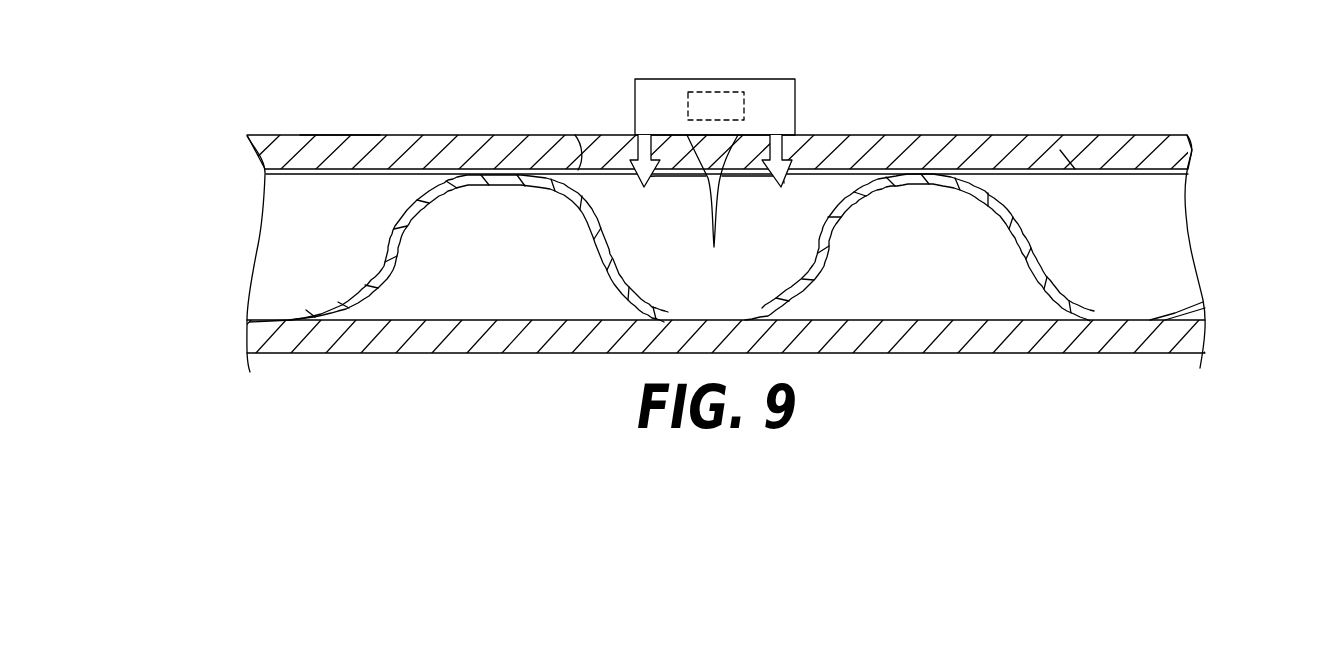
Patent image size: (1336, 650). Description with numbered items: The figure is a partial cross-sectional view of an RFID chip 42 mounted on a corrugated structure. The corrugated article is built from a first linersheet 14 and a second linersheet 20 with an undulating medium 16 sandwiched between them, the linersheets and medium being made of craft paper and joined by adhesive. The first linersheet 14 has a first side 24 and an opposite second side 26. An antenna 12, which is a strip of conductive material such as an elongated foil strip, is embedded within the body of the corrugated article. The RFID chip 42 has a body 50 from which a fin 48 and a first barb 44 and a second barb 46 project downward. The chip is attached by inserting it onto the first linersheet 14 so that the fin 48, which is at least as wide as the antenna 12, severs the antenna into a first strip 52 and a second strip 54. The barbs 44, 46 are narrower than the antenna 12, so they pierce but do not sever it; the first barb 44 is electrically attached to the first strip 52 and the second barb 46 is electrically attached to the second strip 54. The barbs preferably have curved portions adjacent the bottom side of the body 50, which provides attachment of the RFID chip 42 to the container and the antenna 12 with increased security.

The antenna 12 is at (264, 178).
The first linersheet 14 is at (256, 141).
The undulating medium 16 is at (1030, 238).
The second linersheet 20 is at (853, 340).
The first side 24 is at (272, 171).
The second side 26 is at (338, 135).
The RFID chip 42 is at (746, 105).
The first barb 44 is at (648, 190).
The second barb 46 is at (776, 190).
The fin 48 is at (717, 227).
The body 50 is at (635, 82).
The first strip 52 is at (575, 135).
The second strip 54 is at (1070, 169).